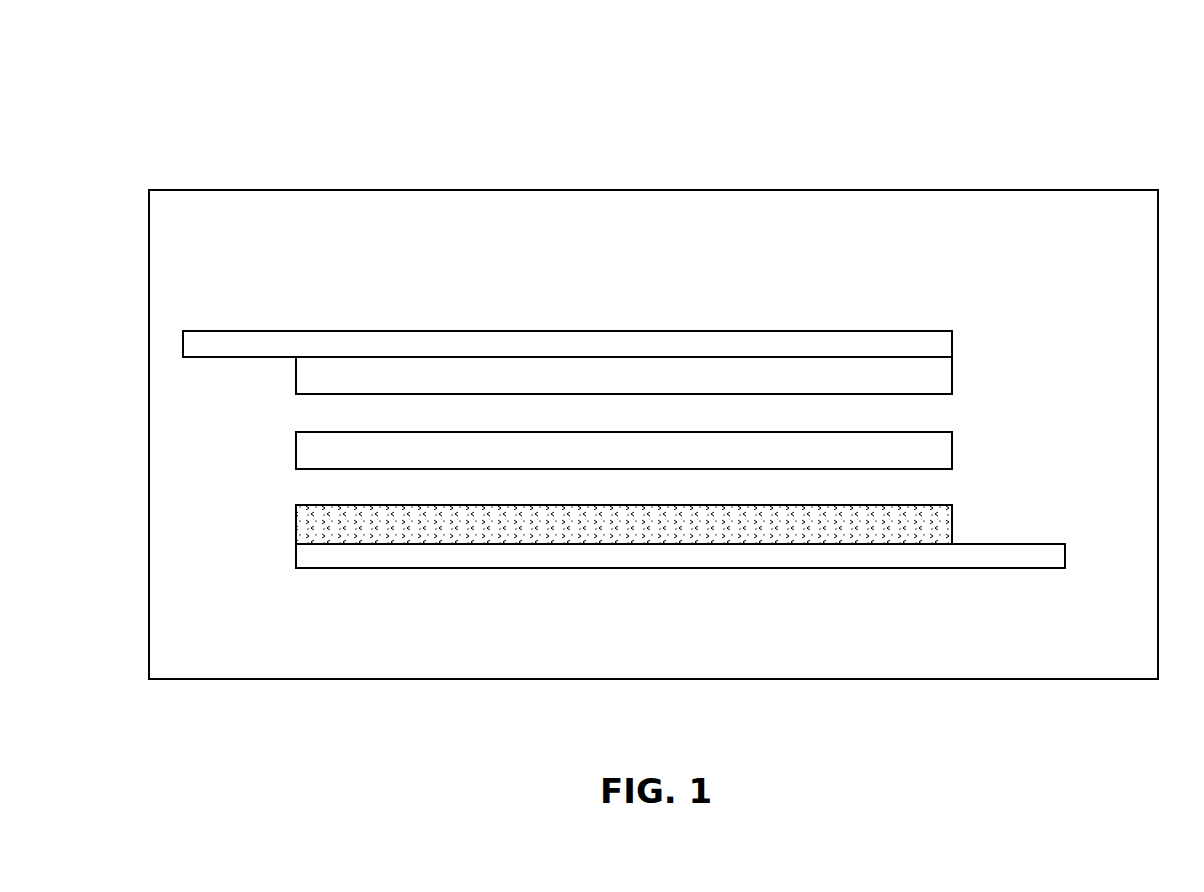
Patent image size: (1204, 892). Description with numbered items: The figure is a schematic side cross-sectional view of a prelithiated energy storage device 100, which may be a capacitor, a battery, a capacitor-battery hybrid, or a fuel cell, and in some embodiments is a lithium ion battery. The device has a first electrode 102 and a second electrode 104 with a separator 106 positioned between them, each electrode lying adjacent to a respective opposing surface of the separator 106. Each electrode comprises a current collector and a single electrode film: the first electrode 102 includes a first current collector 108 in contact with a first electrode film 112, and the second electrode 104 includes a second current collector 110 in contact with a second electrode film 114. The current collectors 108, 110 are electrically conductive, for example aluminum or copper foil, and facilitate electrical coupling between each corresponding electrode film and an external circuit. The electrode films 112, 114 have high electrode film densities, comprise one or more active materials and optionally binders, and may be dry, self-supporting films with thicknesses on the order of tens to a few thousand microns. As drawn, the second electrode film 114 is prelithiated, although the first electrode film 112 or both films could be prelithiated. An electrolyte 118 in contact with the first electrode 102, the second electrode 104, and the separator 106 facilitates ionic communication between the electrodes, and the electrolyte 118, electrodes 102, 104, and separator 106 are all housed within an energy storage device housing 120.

The prelithiated energy storage device 100 is at (214, 110).
The first electrode 102 is at (1057, 311).
The second electrode 104 is at (216, 488).
The separator 106 is at (952, 447).
The first current collector 108 is at (952, 342).
The second current collector 110 is at (296, 557).
The first electrode film 112 is at (952, 375).
The second electrode film 114 is at (296, 522).
The electrolyte 118 is at (1108, 213).
The energy storage device housing 120 is at (920, 190).